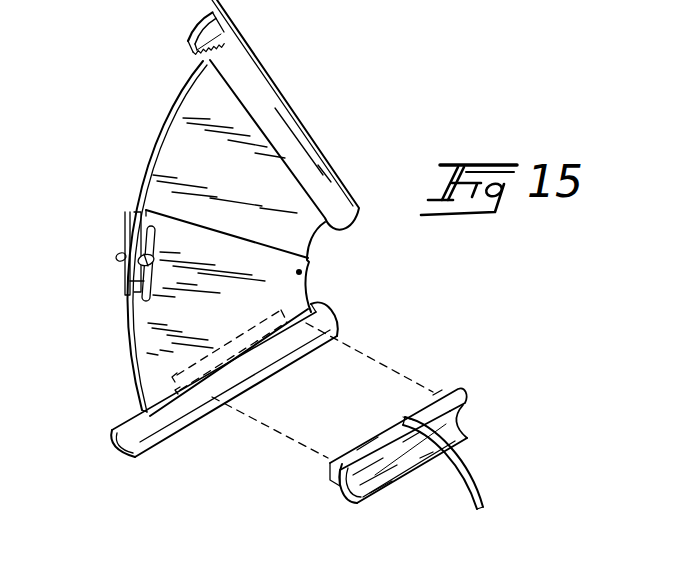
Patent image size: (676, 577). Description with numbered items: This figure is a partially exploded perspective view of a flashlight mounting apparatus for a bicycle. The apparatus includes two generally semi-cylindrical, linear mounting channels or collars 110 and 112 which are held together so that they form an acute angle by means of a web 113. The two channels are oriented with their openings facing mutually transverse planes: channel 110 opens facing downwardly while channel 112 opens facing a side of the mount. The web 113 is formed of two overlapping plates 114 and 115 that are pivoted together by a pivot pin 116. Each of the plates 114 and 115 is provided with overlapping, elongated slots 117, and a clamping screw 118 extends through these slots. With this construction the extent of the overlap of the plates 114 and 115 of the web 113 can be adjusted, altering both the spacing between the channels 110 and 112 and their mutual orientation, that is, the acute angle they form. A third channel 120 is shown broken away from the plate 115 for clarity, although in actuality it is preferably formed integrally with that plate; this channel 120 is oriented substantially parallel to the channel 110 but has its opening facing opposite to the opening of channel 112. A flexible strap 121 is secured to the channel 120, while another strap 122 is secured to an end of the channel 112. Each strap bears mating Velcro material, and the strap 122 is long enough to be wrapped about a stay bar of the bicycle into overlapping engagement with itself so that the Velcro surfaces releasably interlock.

The mounting channel 110 is at (338, 321).
The mounting channel 112 is at (358, 208).
The web 113 is at (118, 199).
The plate 114 is at (160, 127).
The plate 115 is at (132, 313).
The pivot pin 116 is at (303, 273).
The elongated slots 117 is at (134, 282).
The clamping screw 118 is at (117, 254).
The third channel 120 is at (320, 507).
The flexible strap 121 is at (474, 477).
The strap 122 is at (210, 1).